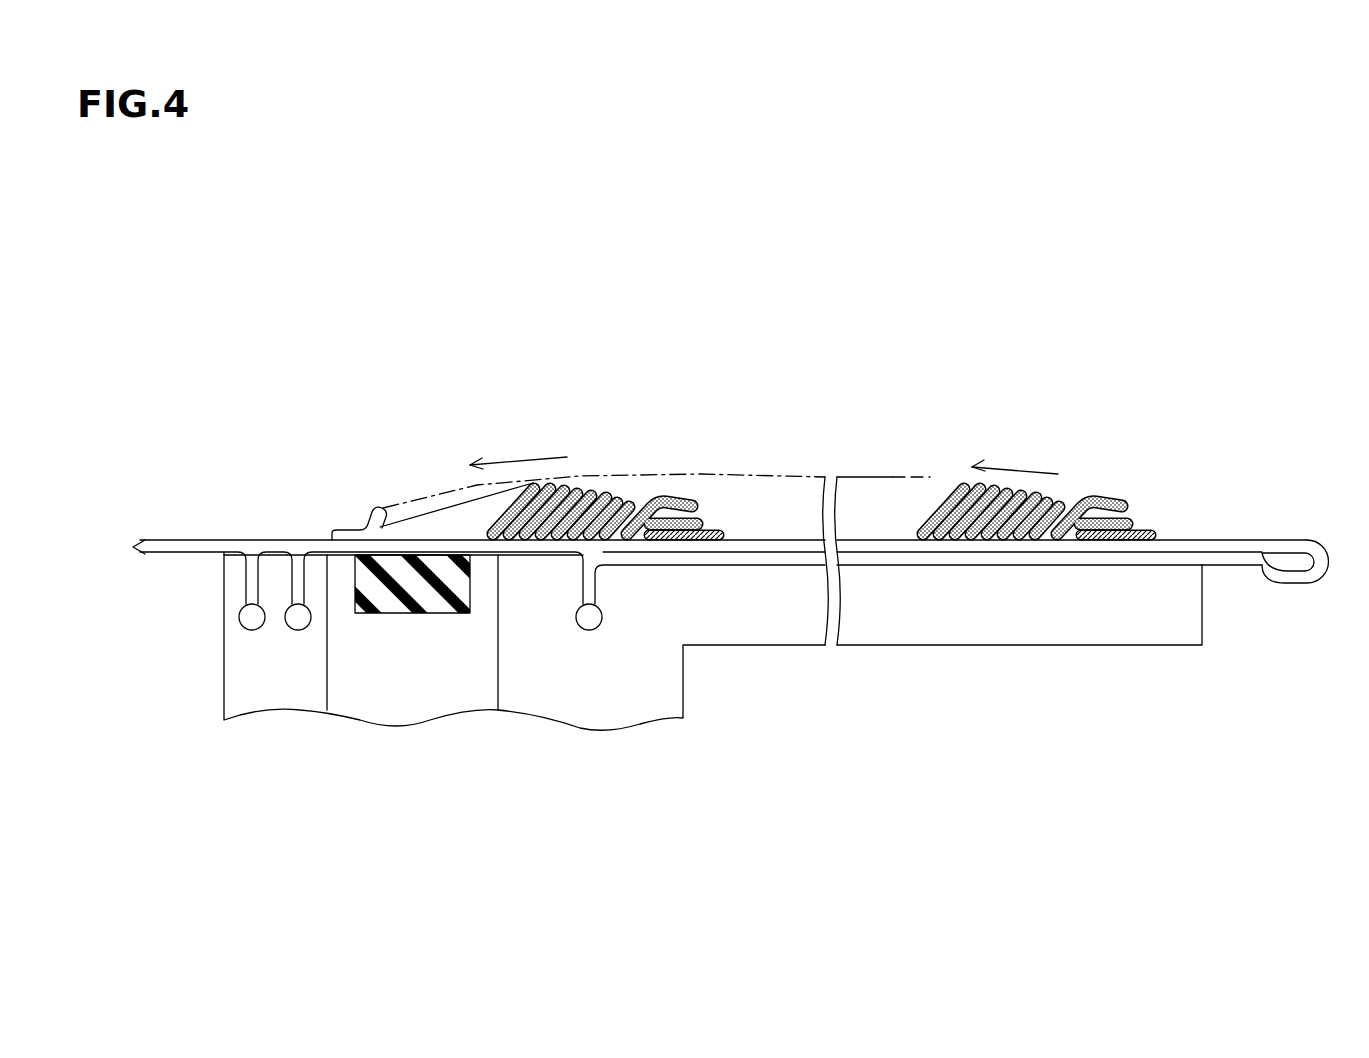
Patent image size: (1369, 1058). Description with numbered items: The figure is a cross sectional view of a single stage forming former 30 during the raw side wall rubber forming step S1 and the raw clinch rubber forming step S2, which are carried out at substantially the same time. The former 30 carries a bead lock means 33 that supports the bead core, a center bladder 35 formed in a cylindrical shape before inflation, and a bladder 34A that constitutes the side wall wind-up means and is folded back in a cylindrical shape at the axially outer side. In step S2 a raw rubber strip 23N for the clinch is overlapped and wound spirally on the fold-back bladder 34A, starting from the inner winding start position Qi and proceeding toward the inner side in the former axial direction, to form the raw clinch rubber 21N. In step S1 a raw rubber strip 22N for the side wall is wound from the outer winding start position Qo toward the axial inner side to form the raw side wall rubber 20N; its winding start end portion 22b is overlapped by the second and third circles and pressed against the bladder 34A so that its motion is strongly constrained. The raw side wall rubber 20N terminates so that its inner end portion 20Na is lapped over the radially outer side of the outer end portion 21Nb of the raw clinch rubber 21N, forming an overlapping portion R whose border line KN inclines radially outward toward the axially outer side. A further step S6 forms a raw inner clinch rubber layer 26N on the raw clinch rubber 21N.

The former 30 is at (257, 503).
The center bladder 35 is at (167, 548).
The bead lock means 33 is at (417, 702).
The bladder 34A is at (1250, 542).
The raw inner clinch rubber layer 26N is at (374, 520).
The raw rubber strip for the clinch 23N is at (500, 517).
The raw clinch rubber 21N is at (430, 500).
The raw rubber strip for the side wall 22N is at (963, 500).
The raw side wall rubber 20N is at (870, 478).
The inner end portion 20Na is at (683, 503).
The border line KN is at (700, 517).
The winding start end portion 22b is at (1148, 528).
The outer end portion 21Nb is at (661, 556).
The overlapping portion R is at (731, 472).
The raw side wall rubber forming step S1 is at (1013, 474).
The raw clinch rubber forming step S2 is at (522, 458).
The step of forming the raw inner clinch rubber layer S6 is at (357, 515).
The inner winding start position Qi is at (692, 548).
The outer winding start position Qo is at (1117, 543).